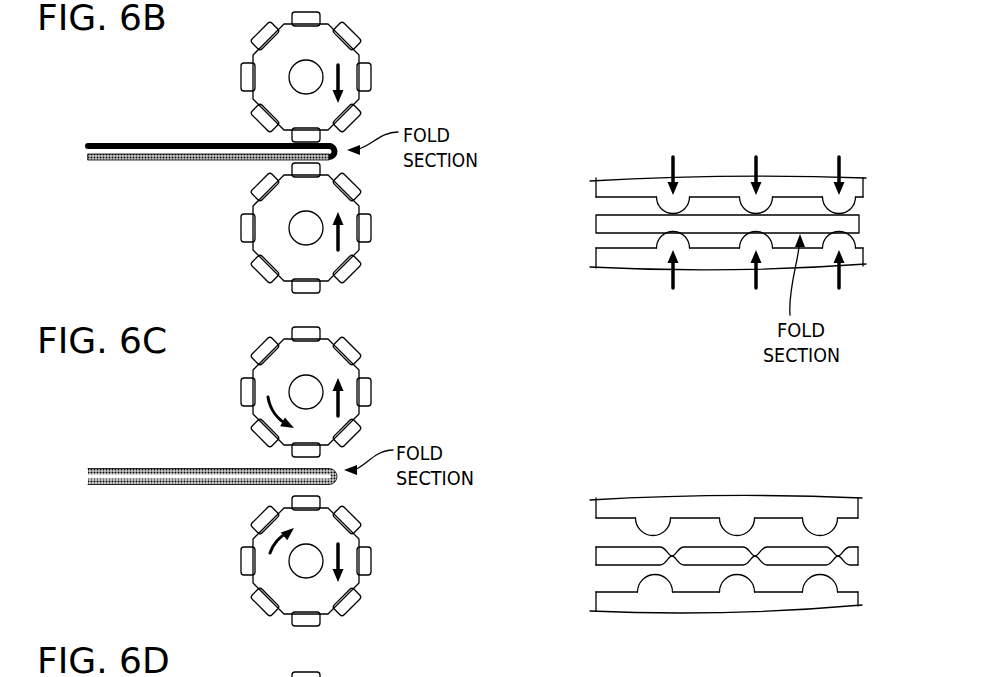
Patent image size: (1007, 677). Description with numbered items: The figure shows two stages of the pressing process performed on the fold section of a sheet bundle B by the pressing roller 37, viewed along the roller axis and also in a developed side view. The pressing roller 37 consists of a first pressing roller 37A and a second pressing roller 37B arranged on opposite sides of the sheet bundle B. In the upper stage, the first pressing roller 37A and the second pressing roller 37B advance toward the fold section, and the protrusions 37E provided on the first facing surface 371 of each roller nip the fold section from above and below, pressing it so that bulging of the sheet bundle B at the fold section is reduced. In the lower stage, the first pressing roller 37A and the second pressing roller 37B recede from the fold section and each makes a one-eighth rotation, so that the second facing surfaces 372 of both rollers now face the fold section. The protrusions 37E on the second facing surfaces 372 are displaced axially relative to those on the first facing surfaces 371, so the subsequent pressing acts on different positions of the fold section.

In FIG. 6B, the pressing roller 37 is at (553, 152).
In FIG. 6C, the pressing roller 37 is at (551, 476).
In FIG. 6B, the first pressing roller 37A is at (392, 86).
In FIG. 6C, the first pressing roller 37A is at (392, 396).
In FIG. 6B, the second pressing roller 37B is at (394, 213).
In FIG. 6C, the second pressing roller 37B is at (386, 533).
In FIG. 6B, the protrusions 37E is at (351, 127).
In FIG. 6C, the protrusions 37E is at (351, 447).
In FIG. 6B, the first facing surface 371 is at (280, 137).
In FIG. 6C, the second facing surface 372 is at (284, 452).
In FIG. 6B, the sheet bundle B is at (130, 143).
In FIG. 6C, the sheet bundle B is at (130, 468).